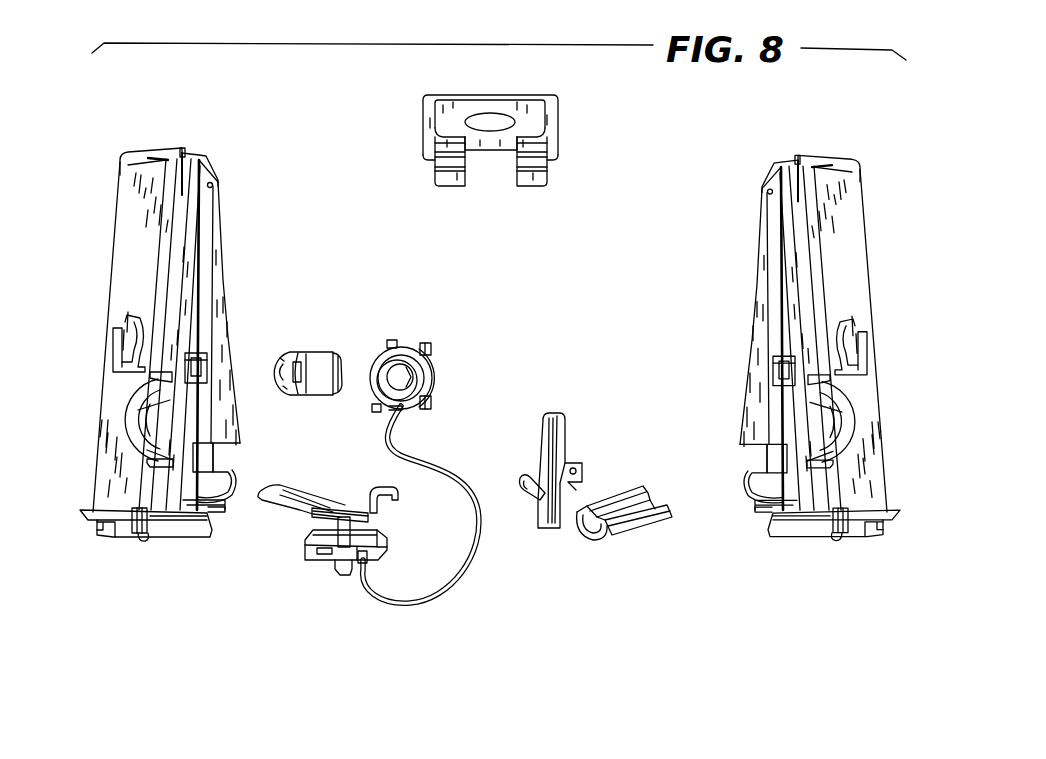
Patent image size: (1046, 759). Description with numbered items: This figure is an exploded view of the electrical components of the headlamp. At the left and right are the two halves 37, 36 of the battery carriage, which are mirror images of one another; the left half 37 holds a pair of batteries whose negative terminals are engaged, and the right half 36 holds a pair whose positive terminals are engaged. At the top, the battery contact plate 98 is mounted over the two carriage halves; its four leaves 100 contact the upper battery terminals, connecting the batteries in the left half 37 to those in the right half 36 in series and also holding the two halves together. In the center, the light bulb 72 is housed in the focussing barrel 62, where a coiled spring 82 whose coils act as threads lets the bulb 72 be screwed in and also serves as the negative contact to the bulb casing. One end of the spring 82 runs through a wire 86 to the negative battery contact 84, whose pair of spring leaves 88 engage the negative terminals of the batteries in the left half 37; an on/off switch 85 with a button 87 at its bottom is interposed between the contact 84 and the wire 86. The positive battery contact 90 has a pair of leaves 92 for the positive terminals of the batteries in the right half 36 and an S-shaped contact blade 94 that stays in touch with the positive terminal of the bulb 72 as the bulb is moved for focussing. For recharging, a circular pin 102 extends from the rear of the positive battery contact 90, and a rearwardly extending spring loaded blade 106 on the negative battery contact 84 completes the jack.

The right half of the battery carriage 36 is at (837, 247).
The left half of the battery carriage 37 is at (142, 242).
The focussing barrel 62 is at (435, 380).
The light bulb 72 is at (285, 348).
The coiled spring 82 is at (374, 395).
The negative battery contact 84 is at (360, 508).
The on/off switch 85 is at (387, 542).
The wire 86 is at (437, 460).
The button 87 is at (343, 575).
The spring leaves 88 is at (287, 483).
The positive battery contact 90 is at (576, 442).
The leaves 92 is at (638, 490).
The contact blade 94 is at (575, 488).
The battery contact plate 98 is at (490, 144).
The leaves 100 is at (443, 145).
The circular pin 102 is at (530, 477).
The spring loaded blade 106 is at (386, 508).